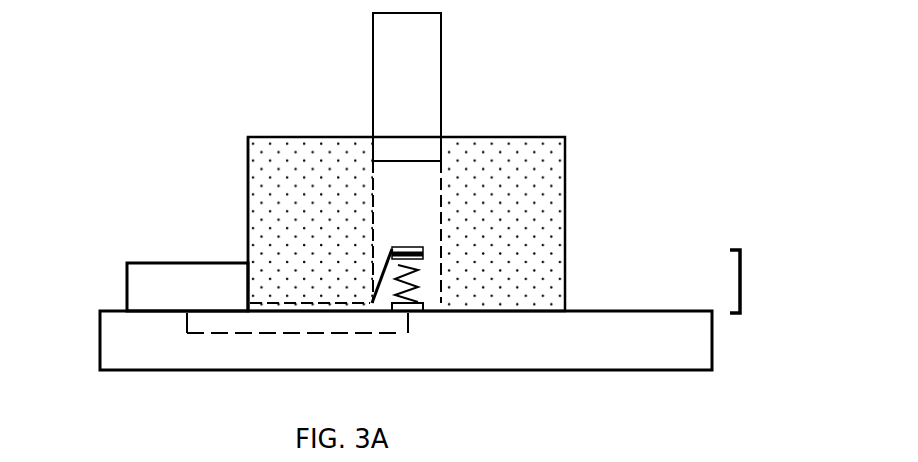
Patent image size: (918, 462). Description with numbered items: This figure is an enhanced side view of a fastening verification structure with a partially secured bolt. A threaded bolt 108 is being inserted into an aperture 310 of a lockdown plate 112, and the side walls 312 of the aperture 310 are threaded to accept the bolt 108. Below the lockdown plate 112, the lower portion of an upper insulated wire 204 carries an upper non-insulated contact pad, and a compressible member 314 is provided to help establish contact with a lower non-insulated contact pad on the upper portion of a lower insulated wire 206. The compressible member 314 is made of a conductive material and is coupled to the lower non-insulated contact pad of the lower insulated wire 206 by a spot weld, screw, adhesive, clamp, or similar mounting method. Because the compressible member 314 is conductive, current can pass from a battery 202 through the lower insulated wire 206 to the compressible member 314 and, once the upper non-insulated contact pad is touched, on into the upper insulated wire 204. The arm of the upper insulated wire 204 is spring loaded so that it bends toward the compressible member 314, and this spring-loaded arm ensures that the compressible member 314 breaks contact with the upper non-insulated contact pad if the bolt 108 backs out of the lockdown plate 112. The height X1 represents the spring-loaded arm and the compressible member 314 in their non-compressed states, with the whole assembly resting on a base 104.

The substrate 104 is at (100, 333).
The bolt 108 is at (442, 85).
The lockdown plate 112 is at (248, 160).
The battery 202 is at (160, 263).
The upper insulated wire 204 is at (396, 236).
The lower insulated wire 206 is at (307, 342).
The aperture 310 is at (430, 183).
The side walls 312 is at (440, 195).
The compressible member 314 is at (420, 293).
The height X1 is at (745, 283).